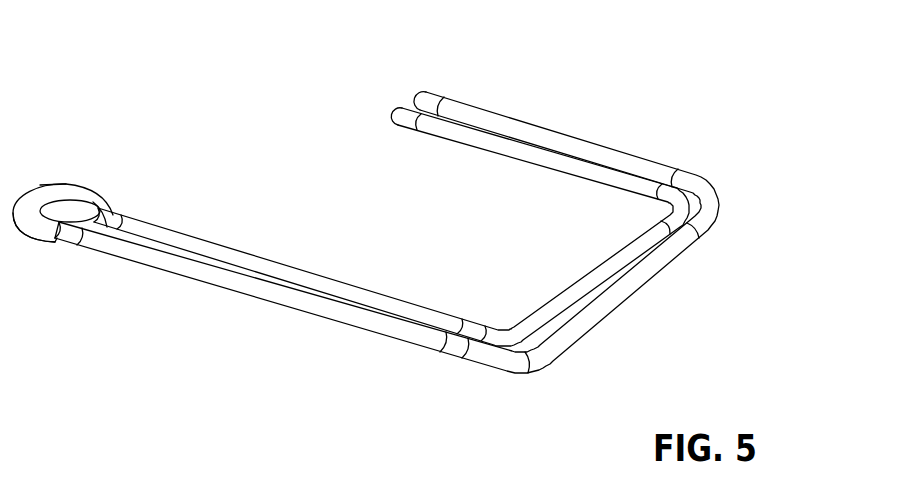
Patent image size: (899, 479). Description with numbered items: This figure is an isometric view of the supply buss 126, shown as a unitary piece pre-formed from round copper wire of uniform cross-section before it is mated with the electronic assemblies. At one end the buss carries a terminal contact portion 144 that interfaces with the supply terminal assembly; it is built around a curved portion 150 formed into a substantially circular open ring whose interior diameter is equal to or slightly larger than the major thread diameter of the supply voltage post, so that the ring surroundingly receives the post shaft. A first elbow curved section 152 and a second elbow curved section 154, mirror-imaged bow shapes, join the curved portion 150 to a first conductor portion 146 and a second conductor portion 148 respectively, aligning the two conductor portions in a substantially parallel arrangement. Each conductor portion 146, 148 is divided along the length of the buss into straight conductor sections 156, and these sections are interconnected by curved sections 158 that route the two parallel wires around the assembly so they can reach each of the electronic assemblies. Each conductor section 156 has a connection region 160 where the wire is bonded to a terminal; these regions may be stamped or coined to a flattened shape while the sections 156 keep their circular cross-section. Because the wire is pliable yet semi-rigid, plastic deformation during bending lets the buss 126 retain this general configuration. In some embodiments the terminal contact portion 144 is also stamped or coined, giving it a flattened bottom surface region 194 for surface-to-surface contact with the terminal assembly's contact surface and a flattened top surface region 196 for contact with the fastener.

The supply buss 126 is at (403, 216).
The terminal contact portion 144 is at (125, 222).
The first conductor portion 146 is at (247, 299).
The second conductor portion 148 is at (262, 254).
The curved portion 150 is at (63, 212).
The first elbow curved section 152 is at (65, 237).
The second elbow curved section 154 is at (100, 215).
The straight conductor sections 156 is at (330, 268).
The curved sections 158 is at (518, 335).
The connection region 160 is at (436, 100).
The bottom surface region 194 is at (30, 243).
The top surface region 196 is at (40, 185).